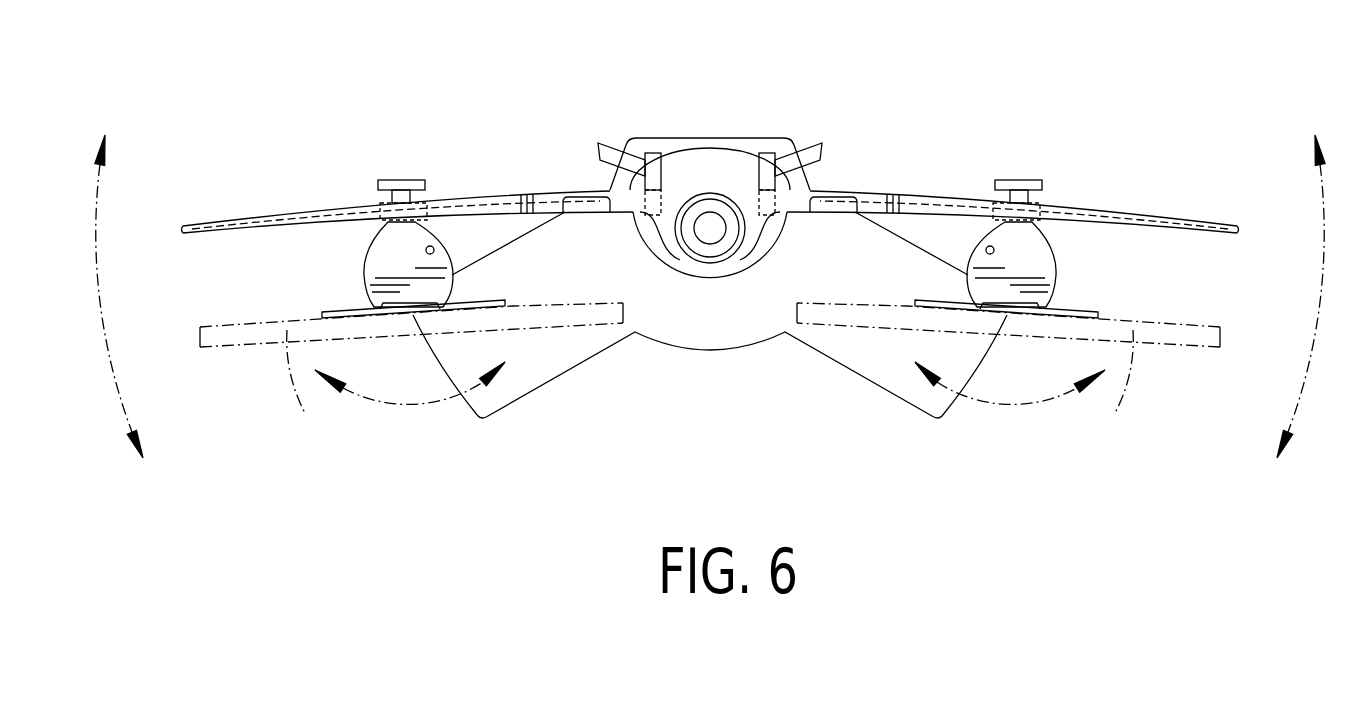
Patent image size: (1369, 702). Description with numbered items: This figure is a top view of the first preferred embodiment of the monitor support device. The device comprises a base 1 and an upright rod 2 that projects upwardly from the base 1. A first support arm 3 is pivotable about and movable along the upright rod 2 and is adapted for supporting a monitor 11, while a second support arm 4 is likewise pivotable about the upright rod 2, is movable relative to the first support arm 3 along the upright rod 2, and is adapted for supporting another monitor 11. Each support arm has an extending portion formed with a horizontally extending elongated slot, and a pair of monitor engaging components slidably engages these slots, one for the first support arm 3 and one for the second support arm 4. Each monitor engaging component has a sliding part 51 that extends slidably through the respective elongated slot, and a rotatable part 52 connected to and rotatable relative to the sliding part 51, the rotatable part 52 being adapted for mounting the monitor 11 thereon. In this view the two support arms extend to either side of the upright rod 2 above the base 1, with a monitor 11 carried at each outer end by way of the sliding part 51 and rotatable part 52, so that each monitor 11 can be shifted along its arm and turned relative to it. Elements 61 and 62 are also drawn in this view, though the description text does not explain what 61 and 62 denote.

The base 1 is at (550, 365).
The upright rod 2 is at (712, 225).
The first support arm 3 is at (909, 158).
The second support arm 4 is at (511, 155).
The monitor 11 is at (710, 375).
The sliding part 51 is at (400, 179).
The rotatable part 52 is at (382, 268).
The right connecting arm 61 is at (807, 153).
The left connecting arm 62 is at (615, 152).